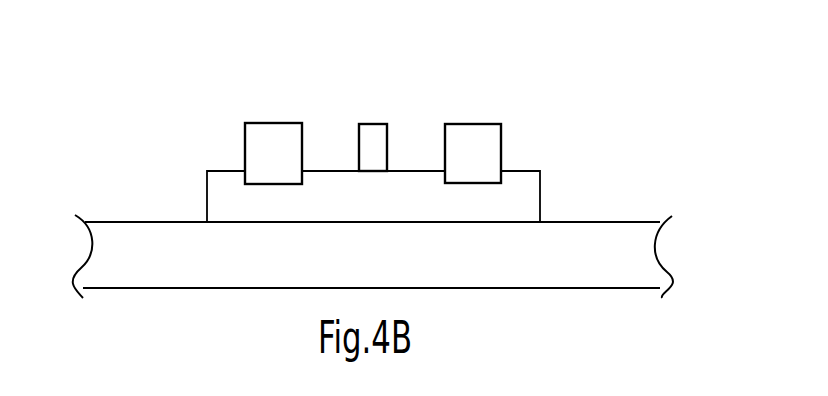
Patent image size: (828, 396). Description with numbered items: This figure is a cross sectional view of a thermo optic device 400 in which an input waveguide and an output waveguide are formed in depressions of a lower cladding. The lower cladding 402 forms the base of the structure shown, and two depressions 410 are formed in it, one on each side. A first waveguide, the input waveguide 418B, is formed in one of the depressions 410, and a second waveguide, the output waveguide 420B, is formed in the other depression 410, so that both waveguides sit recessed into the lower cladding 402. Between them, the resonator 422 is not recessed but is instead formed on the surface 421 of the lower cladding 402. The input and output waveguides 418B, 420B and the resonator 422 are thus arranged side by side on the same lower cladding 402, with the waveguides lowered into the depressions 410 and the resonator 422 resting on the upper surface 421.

The thermo optic device 400 is at (620, 230).
The lower cladding 402 is at (523, 185).
The depressions 410 is at (273, 185).
The input waveguide 418B is at (268, 132).
The output waveguide 420B is at (468, 132).
The surface 421 is at (528, 171).
The resonator 422 is at (370, 130).